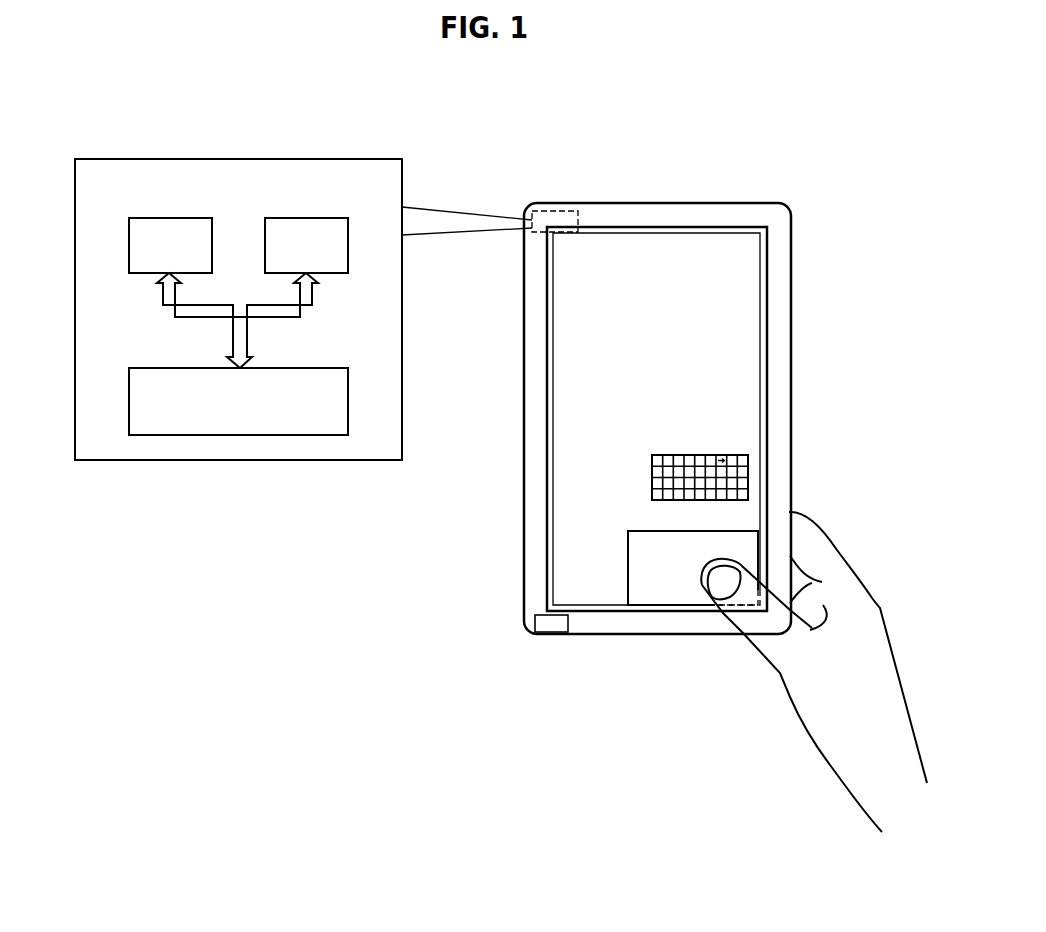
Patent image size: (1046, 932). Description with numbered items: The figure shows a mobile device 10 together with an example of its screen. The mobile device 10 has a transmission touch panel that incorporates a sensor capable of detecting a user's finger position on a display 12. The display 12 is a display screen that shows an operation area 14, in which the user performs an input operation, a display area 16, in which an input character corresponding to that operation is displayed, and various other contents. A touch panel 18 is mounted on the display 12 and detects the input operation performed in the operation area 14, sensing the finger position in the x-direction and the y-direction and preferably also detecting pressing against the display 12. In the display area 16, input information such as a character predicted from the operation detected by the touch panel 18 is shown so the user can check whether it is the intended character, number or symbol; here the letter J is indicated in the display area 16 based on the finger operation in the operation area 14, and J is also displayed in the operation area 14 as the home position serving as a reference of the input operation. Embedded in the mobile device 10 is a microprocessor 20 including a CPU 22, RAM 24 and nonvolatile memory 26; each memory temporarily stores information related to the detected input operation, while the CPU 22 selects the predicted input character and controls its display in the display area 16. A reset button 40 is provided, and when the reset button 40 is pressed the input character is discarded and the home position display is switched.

The mobile device 10 is at (666, 158).
The display 12 is at (742, 296).
The operation area 14 is at (628, 578).
The display area 16 is at (725, 457).
The touch panel 18 is at (762, 371).
The microprocessor 20 is at (551, 211).
The CPU 22 is at (307, 217).
The RAM 24 is at (170, 217).
The nonvolatile memory 26 is at (325, 367).
The reset button 40 is at (537, 627).